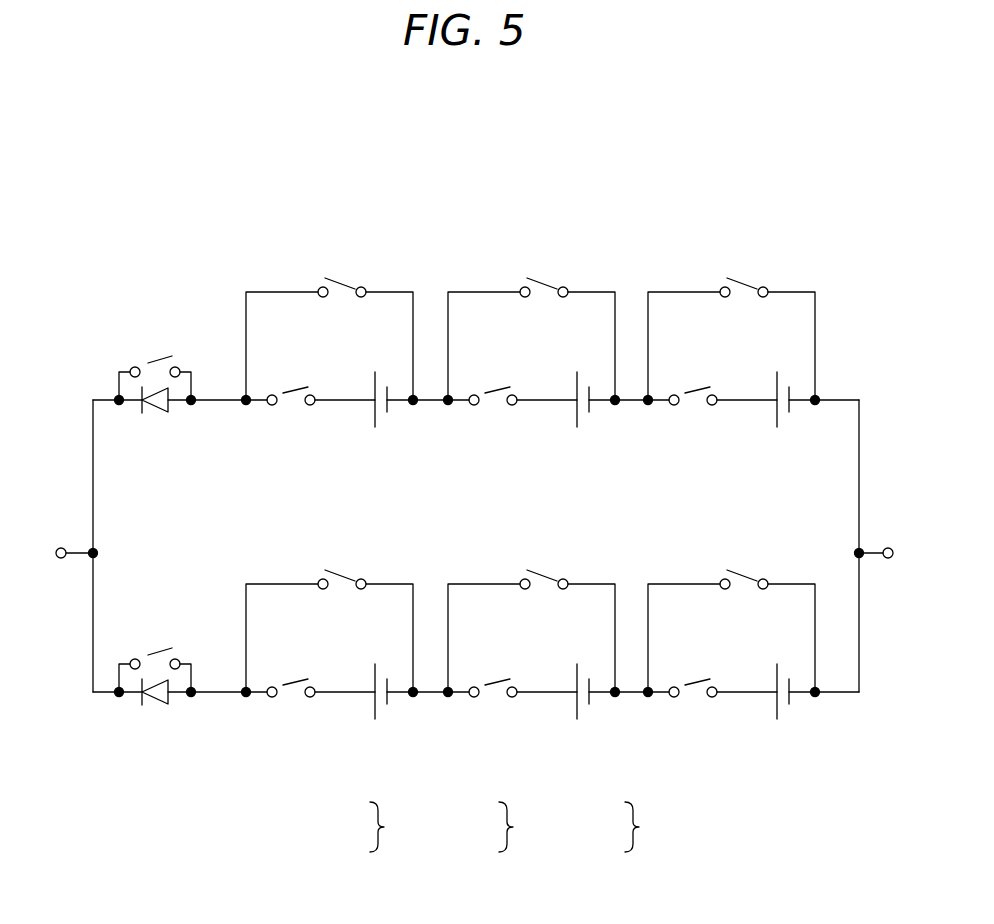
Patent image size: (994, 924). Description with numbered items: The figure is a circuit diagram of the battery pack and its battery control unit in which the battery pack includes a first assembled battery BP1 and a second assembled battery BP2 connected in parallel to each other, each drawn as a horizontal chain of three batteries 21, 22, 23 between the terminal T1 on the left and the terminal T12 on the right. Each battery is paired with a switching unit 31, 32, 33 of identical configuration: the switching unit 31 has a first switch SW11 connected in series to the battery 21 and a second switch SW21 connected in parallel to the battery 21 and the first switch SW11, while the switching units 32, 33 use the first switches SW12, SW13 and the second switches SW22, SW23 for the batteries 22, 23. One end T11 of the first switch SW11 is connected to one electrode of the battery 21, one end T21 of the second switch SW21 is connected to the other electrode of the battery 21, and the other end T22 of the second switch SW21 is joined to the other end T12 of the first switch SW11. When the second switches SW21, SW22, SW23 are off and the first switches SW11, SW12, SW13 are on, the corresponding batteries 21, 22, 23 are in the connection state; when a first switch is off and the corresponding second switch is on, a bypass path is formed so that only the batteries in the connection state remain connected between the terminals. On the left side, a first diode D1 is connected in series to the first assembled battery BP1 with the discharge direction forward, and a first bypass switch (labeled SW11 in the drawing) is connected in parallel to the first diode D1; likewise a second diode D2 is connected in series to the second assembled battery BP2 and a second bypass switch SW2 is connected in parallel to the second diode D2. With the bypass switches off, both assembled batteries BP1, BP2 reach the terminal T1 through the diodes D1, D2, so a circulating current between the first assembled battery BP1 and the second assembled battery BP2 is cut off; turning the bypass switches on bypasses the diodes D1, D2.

The first assembled battery BP1 is at (847, 370).
The second assembled battery BP2 is at (830, 725).
The terminal T1 is at (60, 542).
The other end of the first switch T12 is at (886, 542).
The one end of the first switch T11 is at (327, 407).
The one end of the second switch T21 is at (372, 289).
The other end of the second switch T22 is at (295, 289).
The first diode D1 is at (156, 410).
The second diode D2 is at (154, 701).
The first switch SW11 is at (155, 357).
The first switch SW12 is at (493, 515).
The first switch SW13 is at (693, 515).
The second bypass switch SW2 is at (153, 648).
The second switch SW21 is at (342, 282).
The second switch SW22 is at (539, 396).
The second switch SW23 is at (739, 396).
The battery 21 is at (372, 388).
The battery 22 is at (572, 526).
The battery 23 is at (772, 526).
The switching unit 31 is at (359, 828).
The switching unit 32 is at (489, 828).
The switching unit 33 is at (616, 828).